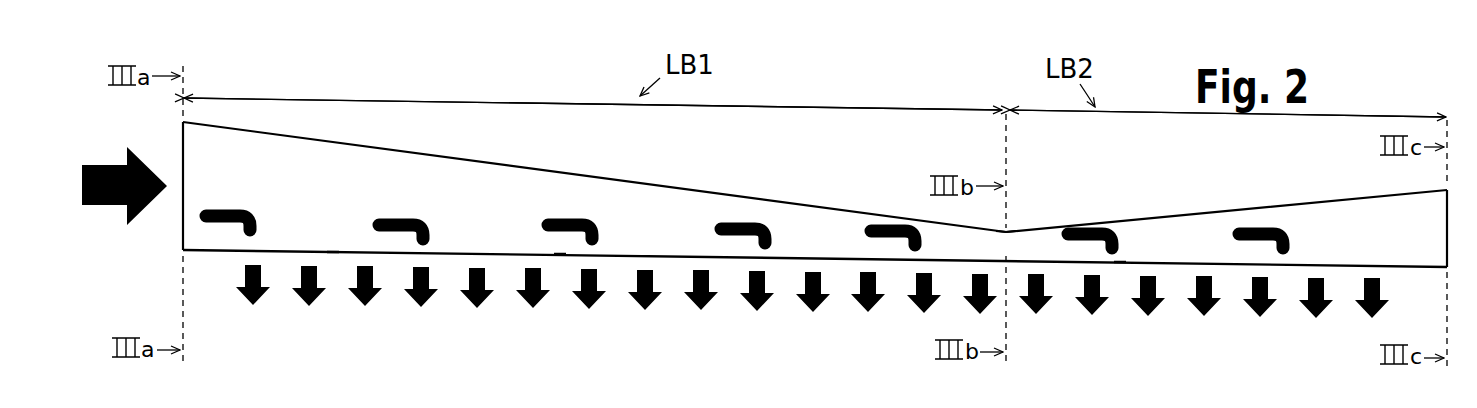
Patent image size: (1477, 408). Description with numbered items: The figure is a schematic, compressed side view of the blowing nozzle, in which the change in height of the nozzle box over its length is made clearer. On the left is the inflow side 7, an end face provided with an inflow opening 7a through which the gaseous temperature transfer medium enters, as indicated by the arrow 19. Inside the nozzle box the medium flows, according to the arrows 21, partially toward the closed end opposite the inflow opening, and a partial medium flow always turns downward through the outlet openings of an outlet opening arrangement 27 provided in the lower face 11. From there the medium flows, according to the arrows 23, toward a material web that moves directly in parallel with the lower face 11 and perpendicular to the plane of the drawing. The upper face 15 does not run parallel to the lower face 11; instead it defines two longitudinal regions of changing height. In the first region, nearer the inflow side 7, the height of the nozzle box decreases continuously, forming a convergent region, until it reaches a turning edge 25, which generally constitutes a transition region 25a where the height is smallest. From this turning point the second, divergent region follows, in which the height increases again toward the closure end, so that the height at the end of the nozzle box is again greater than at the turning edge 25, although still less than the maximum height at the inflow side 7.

The inflow side 7 is at (141, 207).
The inflow opening 7a is at (181, 213).
The lower face 11 is at (842, 263).
The upper face 15 is at (590, 174).
The arrow 19 is at (104, 166).
The arrows 21 is at (233, 210).
The arrows 23 is at (467, 283).
The turning edge 25 is at (1064, 198).
The transition region 25a is at (1014, 228).
The outlet opening arrangement 27 is at (333, 266).